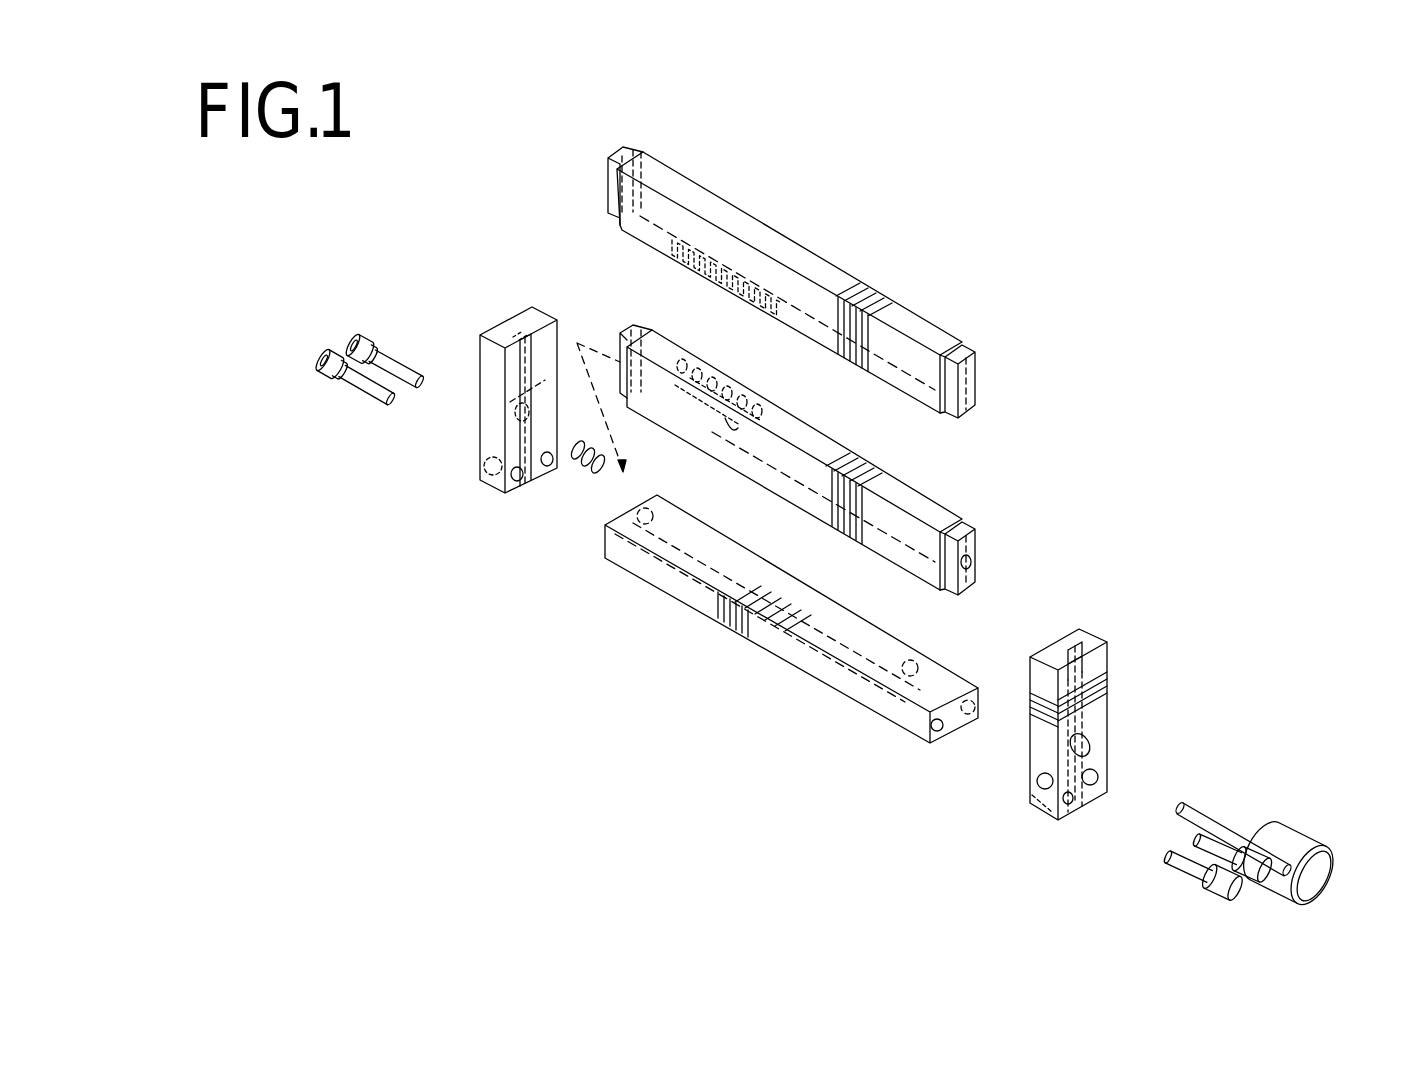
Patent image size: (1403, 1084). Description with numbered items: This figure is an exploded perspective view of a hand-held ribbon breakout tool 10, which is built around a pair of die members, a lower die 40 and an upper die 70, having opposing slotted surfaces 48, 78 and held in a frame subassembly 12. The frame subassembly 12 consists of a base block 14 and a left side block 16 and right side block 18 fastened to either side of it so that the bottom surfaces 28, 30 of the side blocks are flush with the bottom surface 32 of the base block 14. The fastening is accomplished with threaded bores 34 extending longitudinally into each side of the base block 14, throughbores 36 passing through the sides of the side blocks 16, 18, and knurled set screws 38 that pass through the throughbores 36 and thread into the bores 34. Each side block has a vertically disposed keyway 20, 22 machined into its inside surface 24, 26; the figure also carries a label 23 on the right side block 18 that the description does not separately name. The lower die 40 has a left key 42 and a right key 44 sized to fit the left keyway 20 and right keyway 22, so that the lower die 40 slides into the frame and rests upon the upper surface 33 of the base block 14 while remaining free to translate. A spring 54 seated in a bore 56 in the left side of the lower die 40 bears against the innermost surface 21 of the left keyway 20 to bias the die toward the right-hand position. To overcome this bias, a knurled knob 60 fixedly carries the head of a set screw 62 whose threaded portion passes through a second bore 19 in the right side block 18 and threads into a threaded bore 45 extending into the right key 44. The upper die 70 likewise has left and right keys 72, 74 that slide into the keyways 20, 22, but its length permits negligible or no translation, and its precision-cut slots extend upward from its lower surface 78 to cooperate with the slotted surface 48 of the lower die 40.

The ribbon breakout tool 10 is at (268, 298).
The frame subassembly 12 is at (790, 628).
The base block 14 is at (785, 650).
The left side block 16 is at (490, 393).
The right side block 18 is at (1083, 699).
The second bore 19 is at (1088, 745).
The left keyway 20 is at (492, 364).
The innermost surface of the left keyway 21 is at (527, 328).
The right keyway 22 is at (1074, 687).
The groove 23 is at (1054, 660).
The inside surface of the left side block 24 is at (550, 340).
The inside surface of the right side block 26 is at (1078, 655).
The bottom surface of the left side block 28 is at (478, 478).
The bottom surface of the right side block 30 is at (1042, 810).
The bottom surface of the base block 32 is at (835, 700).
The upper surface of the base block 33 is at (810, 600).
The threaded bores 34 is at (698, 523).
The throughbores 36 is at (547, 467).
The knurled set screws 38 is at (352, 392).
The lower die 40 is at (824, 440).
The left key 42 is at (621, 330).
The right key 44 is at (986, 539).
The threaded bore 45 is at (978, 560).
The slotted surface of the lower die 48 is at (808, 438).
The spring 54 is at (592, 472).
The bore 56 is at (730, 430).
The knurled knob 60 is at (1257, 838).
The set screw 62 is at (1216, 806).
The upper die 70 is at (788, 269).
The left key of the upper die 72 is at (612, 150).
The right key of the upper die 74 is at (977, 370).
The lower surface of the upper die 78 is at (790, 322).